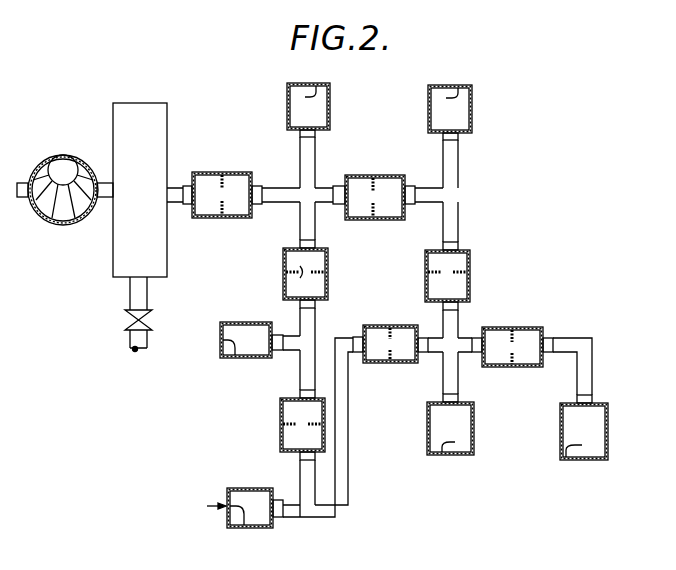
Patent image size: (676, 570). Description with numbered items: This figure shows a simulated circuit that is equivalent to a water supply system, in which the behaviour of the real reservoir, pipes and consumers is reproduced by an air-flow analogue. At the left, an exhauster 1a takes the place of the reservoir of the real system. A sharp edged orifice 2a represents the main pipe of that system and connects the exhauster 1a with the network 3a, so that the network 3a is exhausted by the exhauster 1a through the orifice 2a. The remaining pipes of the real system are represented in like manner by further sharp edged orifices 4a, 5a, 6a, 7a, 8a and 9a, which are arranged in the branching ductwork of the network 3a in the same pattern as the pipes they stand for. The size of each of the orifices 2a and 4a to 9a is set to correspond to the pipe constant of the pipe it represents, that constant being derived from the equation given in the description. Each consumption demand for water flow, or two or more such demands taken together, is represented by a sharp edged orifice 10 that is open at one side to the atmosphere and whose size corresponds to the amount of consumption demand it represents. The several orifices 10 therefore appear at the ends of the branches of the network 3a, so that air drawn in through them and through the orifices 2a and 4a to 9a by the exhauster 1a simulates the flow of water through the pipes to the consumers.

The exhauster 1a is at (54, 160).
The sharp edged orifice 2a is at (221, 200).
The network 3a is at (362, 290).
The sharp edged orifice 4a is at (380, 203).
The sharp edged orifice 5a is at (447, 270).
The sharp edged orifice 6a is at (392, 327).
The sharp edged orifice 7a is at (300, 424).
The sharp edged orifice 8a is at (300, 272).
The sharp edged orifice 9a is at (510, 348).
The sharp edged orifice 10 is at (330, 96).